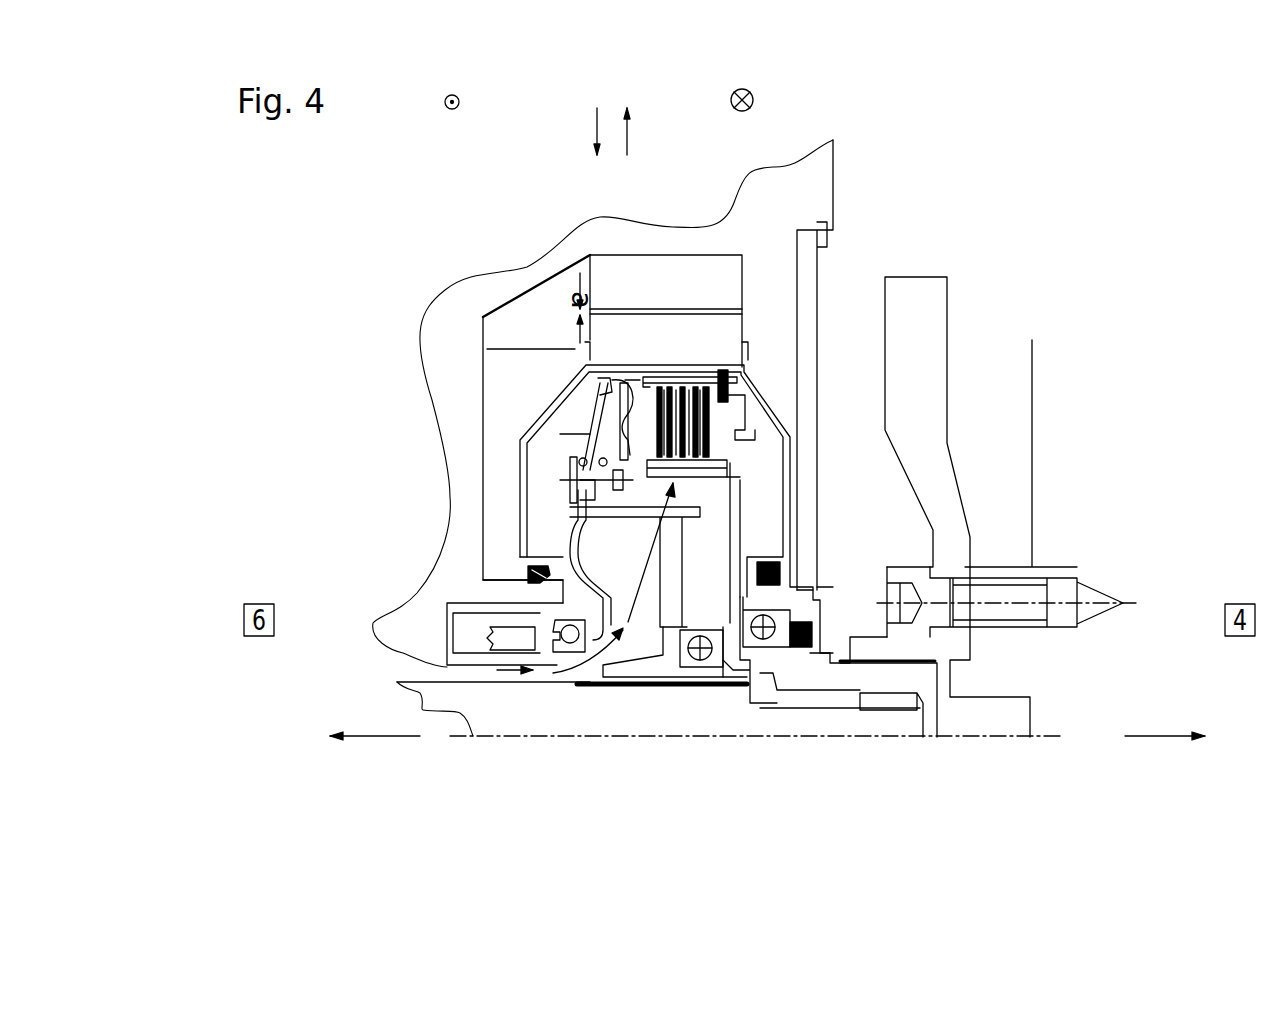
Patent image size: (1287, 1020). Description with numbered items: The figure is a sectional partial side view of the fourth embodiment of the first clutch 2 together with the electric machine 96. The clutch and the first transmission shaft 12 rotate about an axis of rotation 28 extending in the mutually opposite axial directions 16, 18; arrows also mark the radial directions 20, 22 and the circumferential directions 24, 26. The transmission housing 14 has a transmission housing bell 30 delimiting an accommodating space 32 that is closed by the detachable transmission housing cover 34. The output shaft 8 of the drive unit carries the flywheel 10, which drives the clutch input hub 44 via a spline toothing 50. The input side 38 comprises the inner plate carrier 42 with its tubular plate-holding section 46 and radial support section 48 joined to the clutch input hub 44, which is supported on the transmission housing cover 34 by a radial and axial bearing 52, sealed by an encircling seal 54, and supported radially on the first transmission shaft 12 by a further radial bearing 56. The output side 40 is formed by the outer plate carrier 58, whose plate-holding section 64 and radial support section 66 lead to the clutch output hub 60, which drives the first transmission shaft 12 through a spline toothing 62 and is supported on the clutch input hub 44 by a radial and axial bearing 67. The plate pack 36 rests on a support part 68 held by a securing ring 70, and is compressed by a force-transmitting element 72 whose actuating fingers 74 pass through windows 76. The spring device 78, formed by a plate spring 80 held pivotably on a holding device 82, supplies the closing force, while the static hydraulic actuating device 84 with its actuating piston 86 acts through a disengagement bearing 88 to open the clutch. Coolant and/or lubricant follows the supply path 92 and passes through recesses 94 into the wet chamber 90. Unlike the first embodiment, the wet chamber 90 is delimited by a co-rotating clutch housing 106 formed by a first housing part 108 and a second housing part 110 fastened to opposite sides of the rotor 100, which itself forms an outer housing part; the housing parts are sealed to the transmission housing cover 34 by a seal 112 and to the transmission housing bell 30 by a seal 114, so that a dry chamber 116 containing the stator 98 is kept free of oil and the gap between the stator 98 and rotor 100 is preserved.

The first clutch 2 is at (755, 412).
The output shaft 8 is at (1020, 660).
The flywheel 10 is at (915, 318).
The first transmission shaft 12 is at (547, 710).
The transmission housing 14 is at (437, 433).
The axial direction 16 is at (1145, 738).
The axial direction 18 is at (387, 738).
The radial direction 20 is at (627, 136).
The radial direction 22 is at (595, 122).
The circumferential direction 24 is at (445, 108).
The circumferential direction 26 is at (751, 110).
The axis of rotation 28 is at (1043, 738).
The transmission housing bell 30 is at (527, 280).
The accommodating space 32 is at (660, 485).
The transmission housing cover 34 is at (805, 288).
The plate pack 36 is at (708, 450).
The input side 38 is at (800, 522).
The output side 40 is at (545, 546).
The inner plate carrier 42 is at (816, 537).
The clutch input hub 44 is at (837, 677).
The plate-holding section 46 is at (740, 517).
The radial support section 48 is at (730, 535).
The spline toothing 50 is at (922, 663).
The radial and axial bearing 52 is at (777, 660).
The seal 54 is at (810, 660).
The seal 56 is at (887, 702).
The outer plate carrier 58 is at (496, 354).
The clutch output hub 60 is at (633, 670).
The spline toothing 62 is at (665, 687).
The plate-holding section 64 is at (645, 380).
The radial support section 66 is at (598, 508).
The radial and axial bearing 67 is at (700, 667).
The support part 68 is at (787, 437).
The securing ring 70 is at (740, 383).
The force-transmitting element 72 is at (590, 383).
The actuating fingers 74 is at (651, 395).
The windows 76 is at (628, 392).
The spring device 78 is at (585, 440).
The plate spring 80 is at (567, 495).
The holding device 82 is at (572, 478).
The actuating device 84 is at (503, 618).
The actuating piston 86 is at (503, 640).
The disengagement bearing 88 is at (577, 652).
The wet chamber 90 is at (575, 420).
The coolant and/or lubricant supply path 92 is at (553, 670).
The recesses 94 is at (668, 520).
The electric machine 96 is at (748, 305).
The stator 98 is at (725, 268).
The rotor 100 is at (693, 338).
The clutch housing 106 is at (782, 426).
The first housing part 108 is at (805, 487).
The second housing part 110 is at (580, 402).
The seal 112 is at (762, 568).
The seal 114 is at (528, 573).
The dry chamber 116 is at (531, 335).